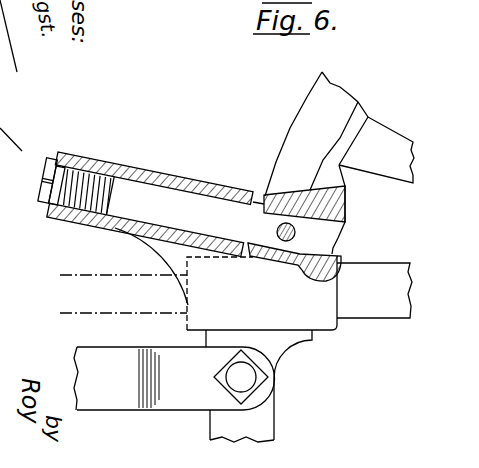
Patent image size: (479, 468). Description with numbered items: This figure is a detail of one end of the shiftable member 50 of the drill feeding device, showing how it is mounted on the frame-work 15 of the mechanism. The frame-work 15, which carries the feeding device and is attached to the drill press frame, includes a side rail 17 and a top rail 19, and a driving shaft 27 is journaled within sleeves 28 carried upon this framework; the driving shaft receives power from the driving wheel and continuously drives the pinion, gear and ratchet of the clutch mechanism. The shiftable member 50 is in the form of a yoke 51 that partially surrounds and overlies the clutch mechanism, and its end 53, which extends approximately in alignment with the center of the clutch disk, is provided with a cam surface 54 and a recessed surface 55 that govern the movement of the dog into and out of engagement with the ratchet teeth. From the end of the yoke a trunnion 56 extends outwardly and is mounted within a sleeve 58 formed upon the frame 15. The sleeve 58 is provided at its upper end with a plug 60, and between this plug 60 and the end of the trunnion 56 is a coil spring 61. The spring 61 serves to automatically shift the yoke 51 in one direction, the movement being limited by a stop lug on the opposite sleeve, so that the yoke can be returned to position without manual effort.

The frame-work 15 is at (279, 423).
The side rail 17 is at (210, 427).
The top rail 19 is at (392, 312).
The driving shaft 27 is at (97, 275).
The sleeve 28 is at (263, 265).
The shiftable member 50 is at (305, 96).
The yoke 51 is at (338, 93).
The end of the yoke 53 is at (285, 197).
The cam surface 54 is at (347, 183).
The recessed surface 55 is at (333, 242).
The trunnion 56 is at (150, 170).
The sleeve 58 is at (120, 165).
The plug 60 is at (41, 171).
The coil spring 61 is at (65, 218).